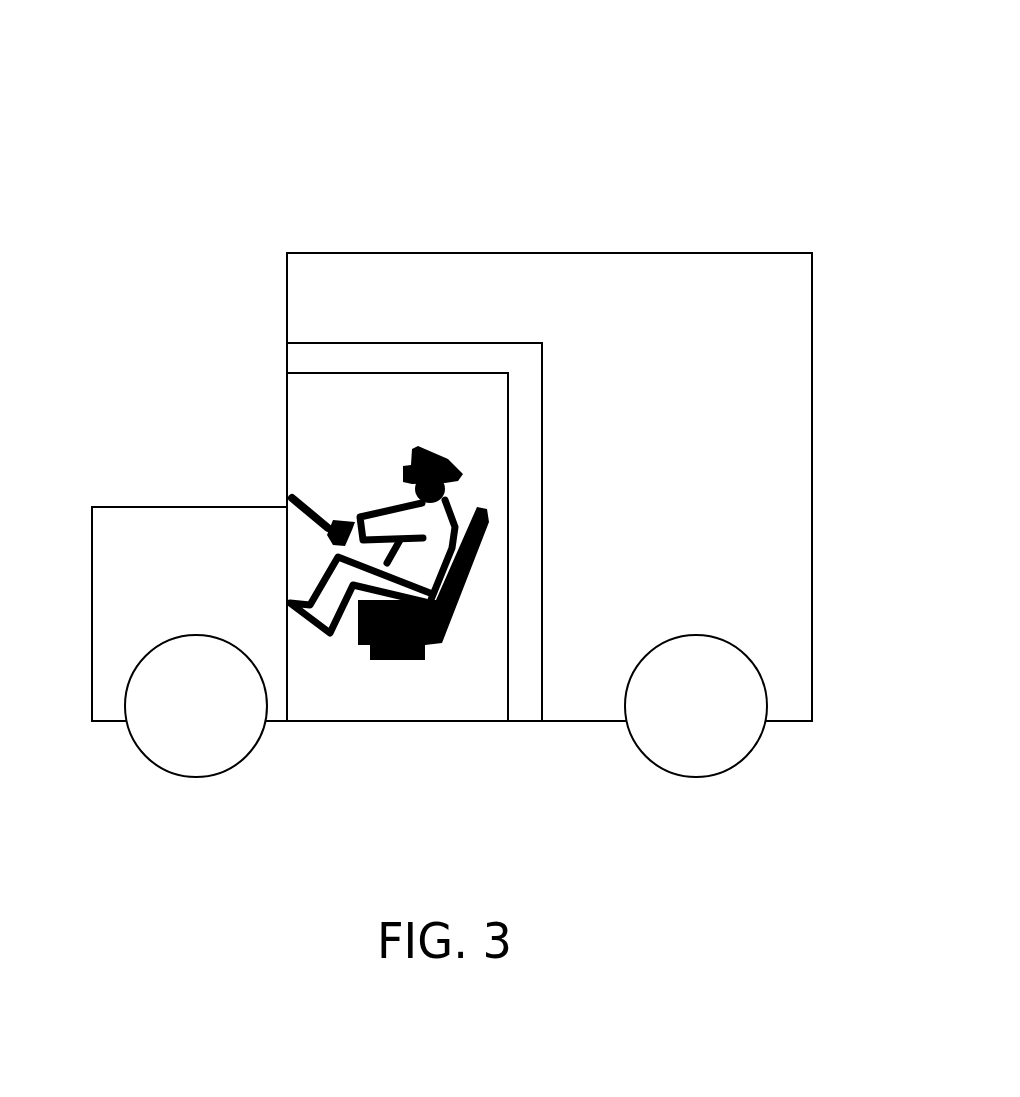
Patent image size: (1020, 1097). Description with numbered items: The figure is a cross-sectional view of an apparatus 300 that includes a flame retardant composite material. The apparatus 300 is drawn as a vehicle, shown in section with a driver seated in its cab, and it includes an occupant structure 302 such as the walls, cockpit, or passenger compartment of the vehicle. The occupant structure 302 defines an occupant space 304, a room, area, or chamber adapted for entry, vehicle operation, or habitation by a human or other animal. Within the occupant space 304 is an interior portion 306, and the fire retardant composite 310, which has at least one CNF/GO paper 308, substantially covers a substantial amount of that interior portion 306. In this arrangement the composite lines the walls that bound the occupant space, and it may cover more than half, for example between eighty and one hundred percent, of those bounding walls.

The apparatus 300 is at (284, 135).
The occupant structure 302 is at (481, 343).
The occupant space 304 is at (316, 448).
The interior portion 306 is at (347, 373).
The CNF/GO paper 308 is at (508, 644).
The fire retardant composite 310 is at (508, 688).